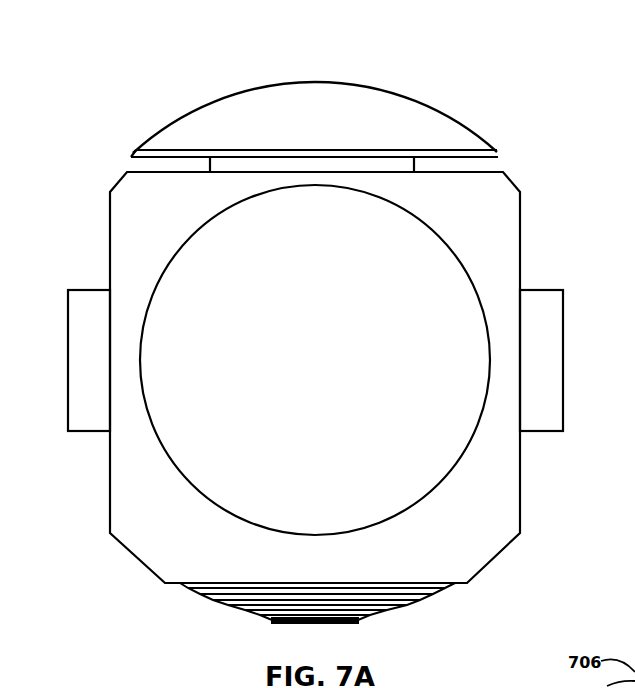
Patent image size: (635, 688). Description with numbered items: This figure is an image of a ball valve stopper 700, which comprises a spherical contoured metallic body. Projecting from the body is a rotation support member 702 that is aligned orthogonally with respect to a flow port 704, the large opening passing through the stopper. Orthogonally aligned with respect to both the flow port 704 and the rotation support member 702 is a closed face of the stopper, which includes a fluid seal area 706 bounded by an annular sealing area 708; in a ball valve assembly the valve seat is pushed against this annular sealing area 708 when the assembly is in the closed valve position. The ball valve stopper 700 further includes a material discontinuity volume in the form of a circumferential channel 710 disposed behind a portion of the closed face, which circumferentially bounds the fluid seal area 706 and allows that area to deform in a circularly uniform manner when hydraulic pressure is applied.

The ball valve stopper 700 is at (412, 60).
The rotation support member 702 is at (62, 322).
The flow port 704 is at (232, 458).
The fluid seal area 706 is at (297, 82).
The annular sealing area 708 is at (138, 150).
The circumferential channel 710 is at (490, 166).